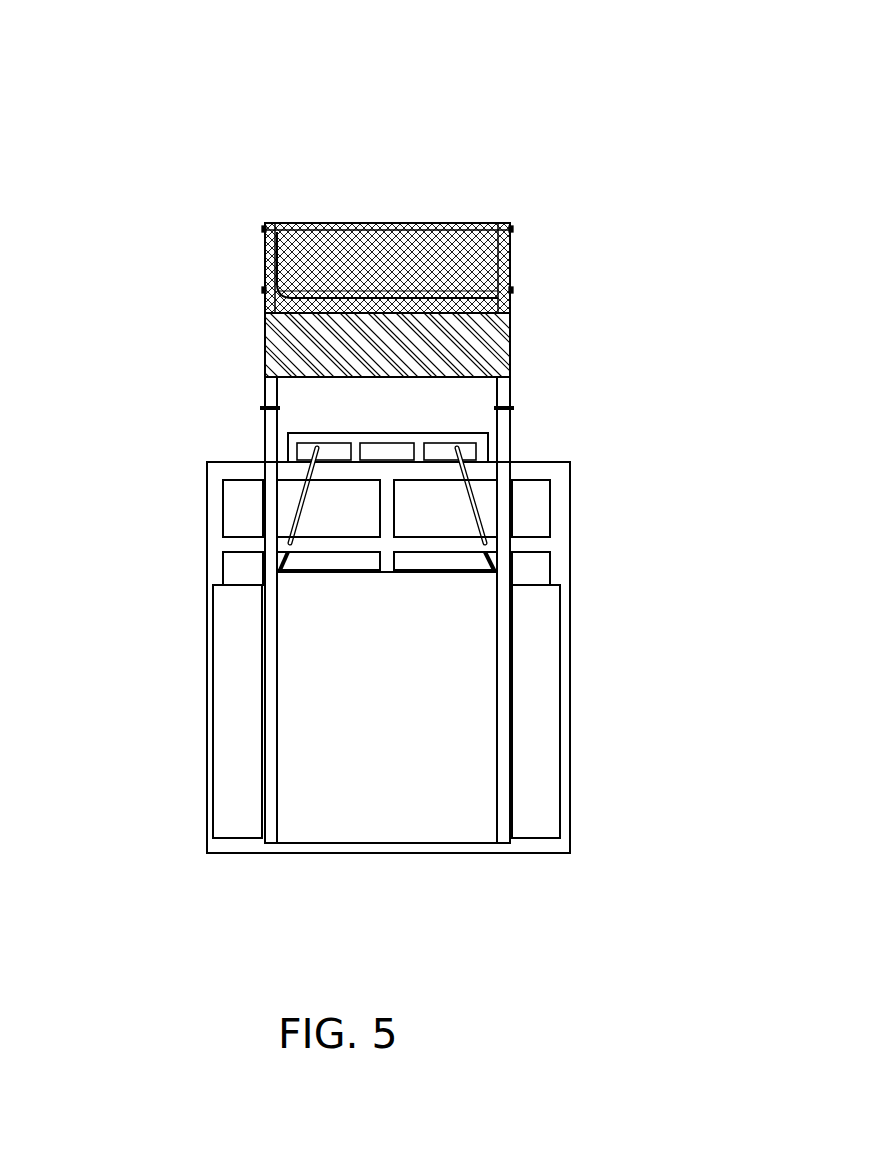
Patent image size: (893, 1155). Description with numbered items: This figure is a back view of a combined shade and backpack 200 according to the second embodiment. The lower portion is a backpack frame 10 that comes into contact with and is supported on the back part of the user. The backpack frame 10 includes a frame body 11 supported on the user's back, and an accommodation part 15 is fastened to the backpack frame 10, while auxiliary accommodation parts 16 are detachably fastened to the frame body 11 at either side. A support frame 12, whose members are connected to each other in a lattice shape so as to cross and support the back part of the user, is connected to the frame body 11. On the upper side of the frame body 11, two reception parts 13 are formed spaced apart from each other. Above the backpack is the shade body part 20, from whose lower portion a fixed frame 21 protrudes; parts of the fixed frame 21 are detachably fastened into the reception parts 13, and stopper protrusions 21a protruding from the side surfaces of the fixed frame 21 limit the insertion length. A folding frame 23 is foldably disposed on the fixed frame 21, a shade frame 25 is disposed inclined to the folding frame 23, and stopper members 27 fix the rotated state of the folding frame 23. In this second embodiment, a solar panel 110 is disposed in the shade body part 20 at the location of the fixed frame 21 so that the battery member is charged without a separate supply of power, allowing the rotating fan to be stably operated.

The combined shade and backpack 200 is at (443, 141).
The shade body part 20 is at (367, 223).
The folding frame 23 is at (263, 278).
The shade frame 25 is at (263, 338).
The stopper members 27 is at (263, 238).
The solar panel 110 is at (513, 335).
The fixed frame 21 is at (268, 382).
The stopper protrusions 21a is at (268, 408).
The backpack frame 10 is at (79, 592).
The frame body 11 is at (212, 668).
The support frame 12 is at (525, 545).
The reception parts 13 is at (507, 515).
The accommodation part 15 is at (323, 802).
The auxiliary accommodation parts 16 is at (222, 803).